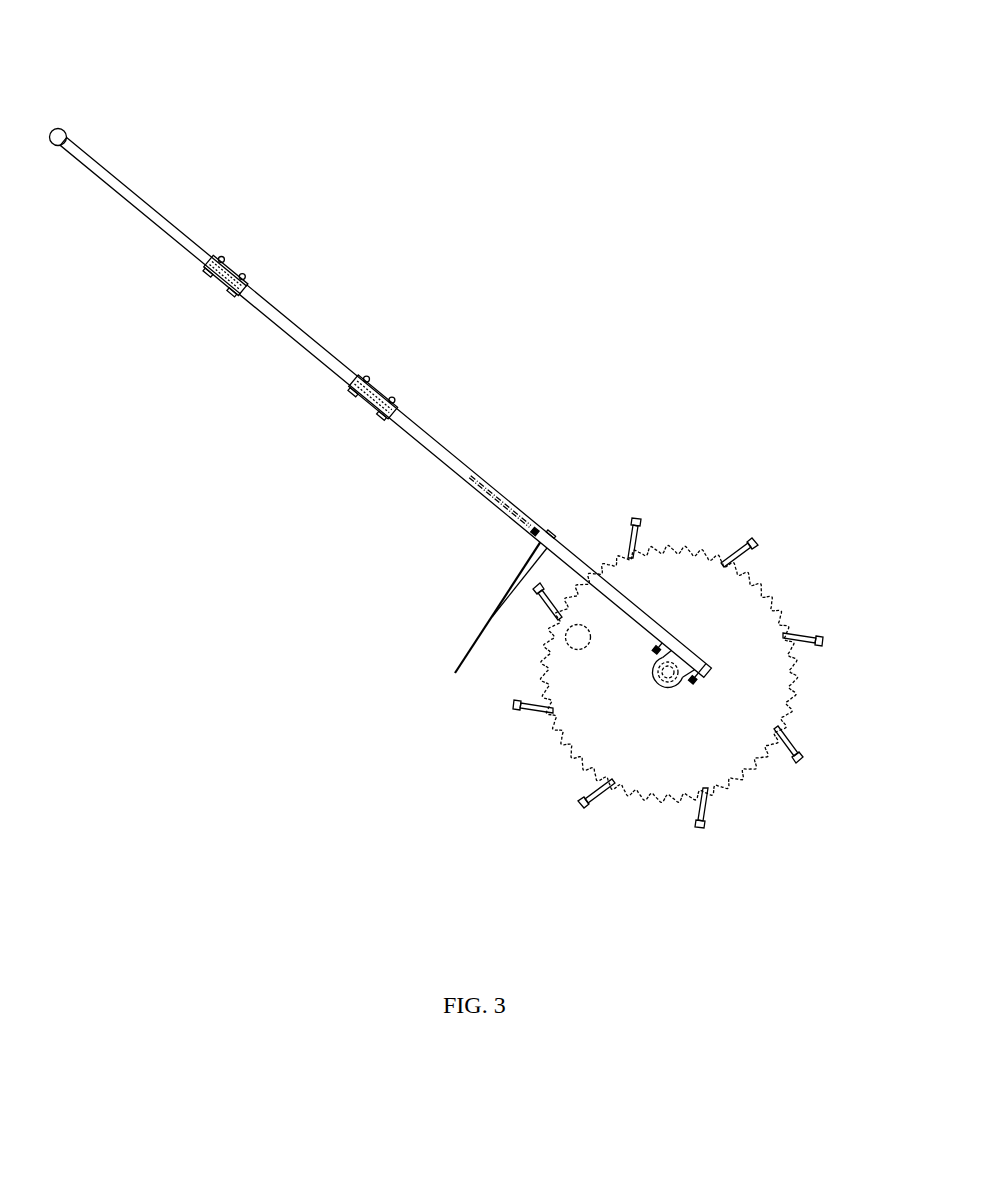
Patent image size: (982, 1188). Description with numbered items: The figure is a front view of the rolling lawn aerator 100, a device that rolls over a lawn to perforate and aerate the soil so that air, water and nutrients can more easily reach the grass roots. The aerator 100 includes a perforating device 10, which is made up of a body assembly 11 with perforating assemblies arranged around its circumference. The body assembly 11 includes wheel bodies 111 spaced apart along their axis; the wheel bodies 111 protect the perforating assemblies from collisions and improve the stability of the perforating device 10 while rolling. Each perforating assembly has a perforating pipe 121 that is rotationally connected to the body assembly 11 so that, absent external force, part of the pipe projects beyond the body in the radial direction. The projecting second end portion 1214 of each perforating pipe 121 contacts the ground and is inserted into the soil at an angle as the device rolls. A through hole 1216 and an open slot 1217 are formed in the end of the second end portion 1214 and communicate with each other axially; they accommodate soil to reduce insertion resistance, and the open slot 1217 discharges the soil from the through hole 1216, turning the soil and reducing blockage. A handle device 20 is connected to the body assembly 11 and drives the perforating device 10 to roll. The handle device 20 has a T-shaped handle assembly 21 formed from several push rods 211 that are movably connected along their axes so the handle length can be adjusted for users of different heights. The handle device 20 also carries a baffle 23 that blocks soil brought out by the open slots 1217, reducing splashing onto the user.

The rolling lawn aerator 100 is at (470, 68).
The perforating device 10 is at (668, 520).
The body assembly 11 is at (763, 603).
The wheel body 111 is at (767, 692).
The perforating pipe 121 is at (820, 630).
The second end portion 1214 is at (585, 803).
The through hole 1216 is at (707, 828).
The open slot 1217 is at (703, 813).
The handle device 20 is at (205, 240).
The handle assembly 21 is at (253, 287).
The push rod 211 is at (315, 343).
The baffle 23 is at (475, 635).